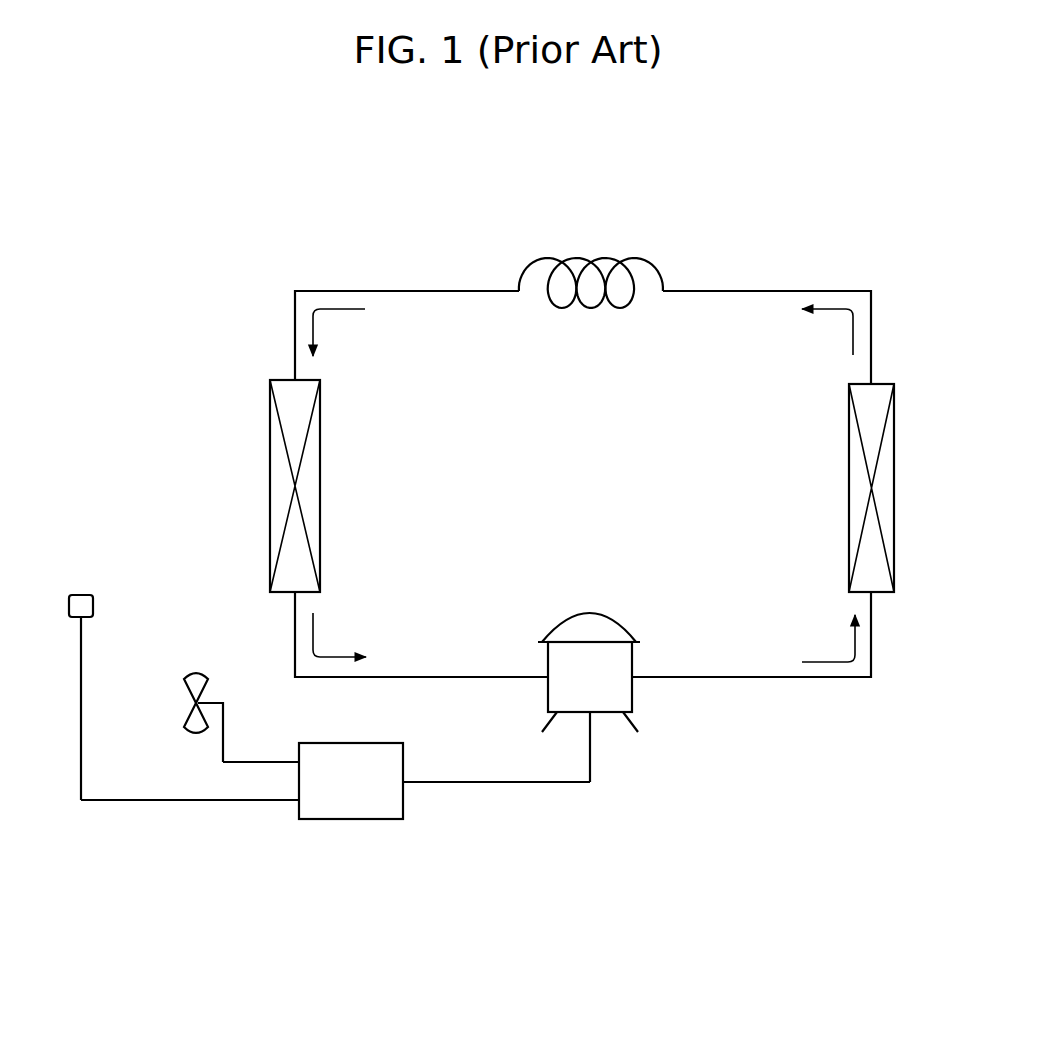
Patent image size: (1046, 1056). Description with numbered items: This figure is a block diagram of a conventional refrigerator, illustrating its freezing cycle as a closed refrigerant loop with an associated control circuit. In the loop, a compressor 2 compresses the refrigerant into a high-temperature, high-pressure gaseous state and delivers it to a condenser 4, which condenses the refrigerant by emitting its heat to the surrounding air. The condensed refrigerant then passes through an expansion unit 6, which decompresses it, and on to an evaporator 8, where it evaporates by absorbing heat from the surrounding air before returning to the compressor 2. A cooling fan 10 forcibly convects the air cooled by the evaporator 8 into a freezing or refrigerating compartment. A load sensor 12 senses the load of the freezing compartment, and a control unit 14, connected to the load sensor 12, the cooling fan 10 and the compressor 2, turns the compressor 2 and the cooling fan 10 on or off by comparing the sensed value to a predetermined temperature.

The compressor 2 is at (633, 690).
The condenser 4 is at (894, 478).
The expansion unit 6 is at (572, 258).
The evaporator 8 is at (269, 487).
The cooling fan 10 is at (185, 673).
The load sensor 12 is at (78, 595).
The control unit 14 is at (352, 820).